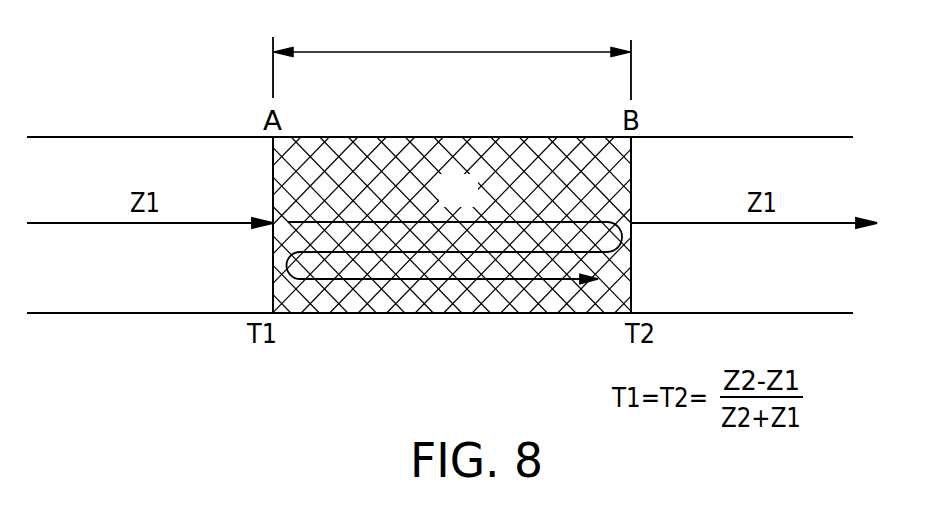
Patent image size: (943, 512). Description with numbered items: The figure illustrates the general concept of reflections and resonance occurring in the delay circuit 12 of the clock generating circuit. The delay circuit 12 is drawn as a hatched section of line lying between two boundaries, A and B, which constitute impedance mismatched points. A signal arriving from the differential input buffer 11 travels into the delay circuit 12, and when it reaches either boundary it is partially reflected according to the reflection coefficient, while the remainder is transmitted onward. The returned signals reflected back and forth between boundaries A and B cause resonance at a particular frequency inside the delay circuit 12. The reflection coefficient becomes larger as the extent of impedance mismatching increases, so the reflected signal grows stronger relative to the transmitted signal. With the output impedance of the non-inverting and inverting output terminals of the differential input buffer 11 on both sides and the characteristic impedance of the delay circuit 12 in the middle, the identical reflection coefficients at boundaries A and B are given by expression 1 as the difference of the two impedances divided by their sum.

The differential input buffer 11 is at (440, 175).
The delay circuit 12 is at (452, 202).
The propagation delay tau 1 is at (452, 32).